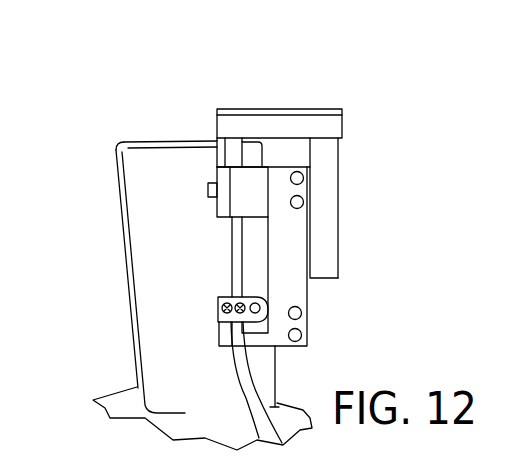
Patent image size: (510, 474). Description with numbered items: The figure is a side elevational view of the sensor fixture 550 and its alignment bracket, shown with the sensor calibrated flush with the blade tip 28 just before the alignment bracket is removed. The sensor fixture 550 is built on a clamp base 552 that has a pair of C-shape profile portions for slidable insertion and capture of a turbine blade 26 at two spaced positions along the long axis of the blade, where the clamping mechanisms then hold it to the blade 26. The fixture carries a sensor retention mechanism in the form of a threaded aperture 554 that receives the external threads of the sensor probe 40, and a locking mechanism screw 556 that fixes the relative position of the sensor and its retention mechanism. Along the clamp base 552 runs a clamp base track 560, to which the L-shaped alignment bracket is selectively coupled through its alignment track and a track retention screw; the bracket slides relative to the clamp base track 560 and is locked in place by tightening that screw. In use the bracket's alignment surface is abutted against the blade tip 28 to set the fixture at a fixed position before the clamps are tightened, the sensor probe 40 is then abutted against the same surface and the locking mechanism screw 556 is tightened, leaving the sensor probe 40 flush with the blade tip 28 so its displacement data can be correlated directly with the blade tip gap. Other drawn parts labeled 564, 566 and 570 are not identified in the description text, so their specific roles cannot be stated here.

The blade 26 is at (160, 253).
The blade tip 28 is at (152, 141).
The sensor probe 40 is at (228, 157).
The sensor fixture 550 is at (345, 147).
The clamp base 552 is at (288, 352).
The threaded aperture 554 is at (240, 167).
The locking mechanism screw 556 is at (207, 187).
The clamp base track 560 is at (310, 300).
The top plate 564 is at (347, 77).
The side bar 566 is at (330, 187).
The slot 570 is at (292, 148).